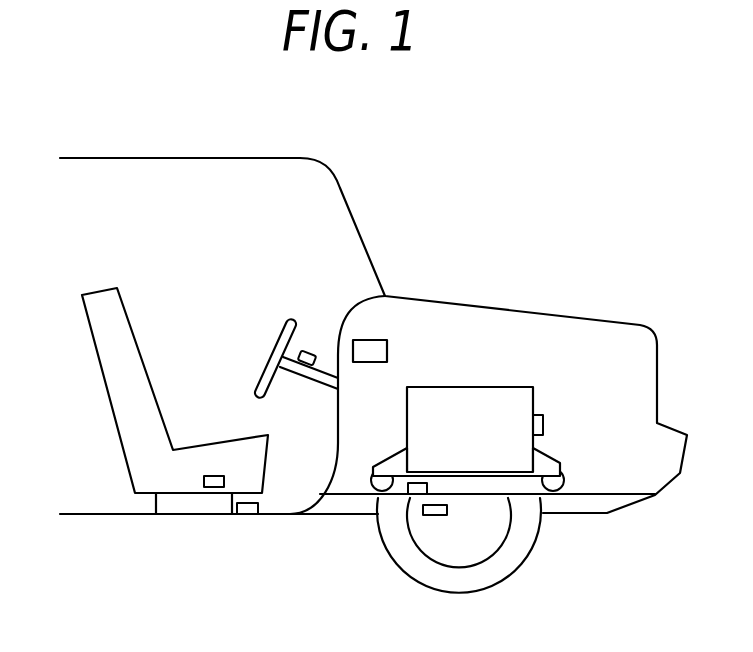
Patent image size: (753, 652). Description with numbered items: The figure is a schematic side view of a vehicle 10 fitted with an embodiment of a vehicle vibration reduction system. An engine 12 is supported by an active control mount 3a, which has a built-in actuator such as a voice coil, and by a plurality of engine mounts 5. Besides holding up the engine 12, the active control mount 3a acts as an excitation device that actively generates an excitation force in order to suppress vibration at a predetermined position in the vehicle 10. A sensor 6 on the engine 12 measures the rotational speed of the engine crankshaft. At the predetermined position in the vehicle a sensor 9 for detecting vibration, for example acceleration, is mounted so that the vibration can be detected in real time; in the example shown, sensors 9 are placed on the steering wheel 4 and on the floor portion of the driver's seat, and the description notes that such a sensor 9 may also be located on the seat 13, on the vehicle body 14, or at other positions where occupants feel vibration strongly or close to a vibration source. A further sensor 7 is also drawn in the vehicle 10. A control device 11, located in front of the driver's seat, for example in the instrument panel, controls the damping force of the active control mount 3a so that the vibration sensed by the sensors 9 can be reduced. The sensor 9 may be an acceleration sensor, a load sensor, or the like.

The active control mount 3a is at (369, 476).
The steering wheel 4 is at (308, 372).
The engine mount 5 is at (557, 482).
The sensor 6 is at (544, 420).
The sensor 7 is at (433, 515).
The sensor 9 is at (308, 353).
The vehicle 10 is at (357, 187).
The control device 11 is at (387, 340).
The engine 12 is at (488, 397).
The seat 13 is at (125, 460).
The vehicle body 14 is at (400, 497).